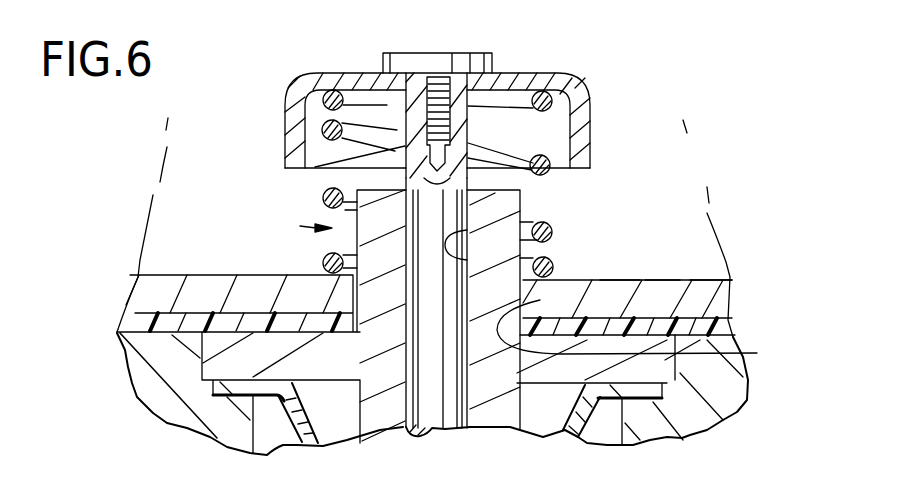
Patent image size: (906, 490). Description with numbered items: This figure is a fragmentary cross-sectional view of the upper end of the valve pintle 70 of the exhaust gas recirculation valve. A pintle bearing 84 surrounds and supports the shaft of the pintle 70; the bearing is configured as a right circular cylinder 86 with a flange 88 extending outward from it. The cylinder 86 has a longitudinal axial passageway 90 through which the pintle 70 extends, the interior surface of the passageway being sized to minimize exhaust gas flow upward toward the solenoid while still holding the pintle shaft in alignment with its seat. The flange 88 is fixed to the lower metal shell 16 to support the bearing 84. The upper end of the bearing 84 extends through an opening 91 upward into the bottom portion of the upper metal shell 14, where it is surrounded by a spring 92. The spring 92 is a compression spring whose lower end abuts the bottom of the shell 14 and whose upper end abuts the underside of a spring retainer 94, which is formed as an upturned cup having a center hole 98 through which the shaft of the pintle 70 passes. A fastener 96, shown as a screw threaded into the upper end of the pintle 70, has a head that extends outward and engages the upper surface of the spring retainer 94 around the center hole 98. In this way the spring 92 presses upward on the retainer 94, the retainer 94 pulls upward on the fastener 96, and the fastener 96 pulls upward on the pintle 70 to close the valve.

The metal shell 14 is at (618, 279).
The lower metal shell 16 is at (705, 279).
The valve pintle 70 is at (340, 168).
The pintle bearing 84 is at (300, 226).
The right circular cylinder 86 is at (520, 201).
The flange 88 is at (662, 279).
The longitudinal axial passageway 90 is at (553, 238).
The opening 91 is at (649, 334).
The spring 92 is at (323, 262).
The spring retainer 94 is at (590, 117).
The fastener 96 is at (453, 53).
The center hole 98 is at (468, 105).